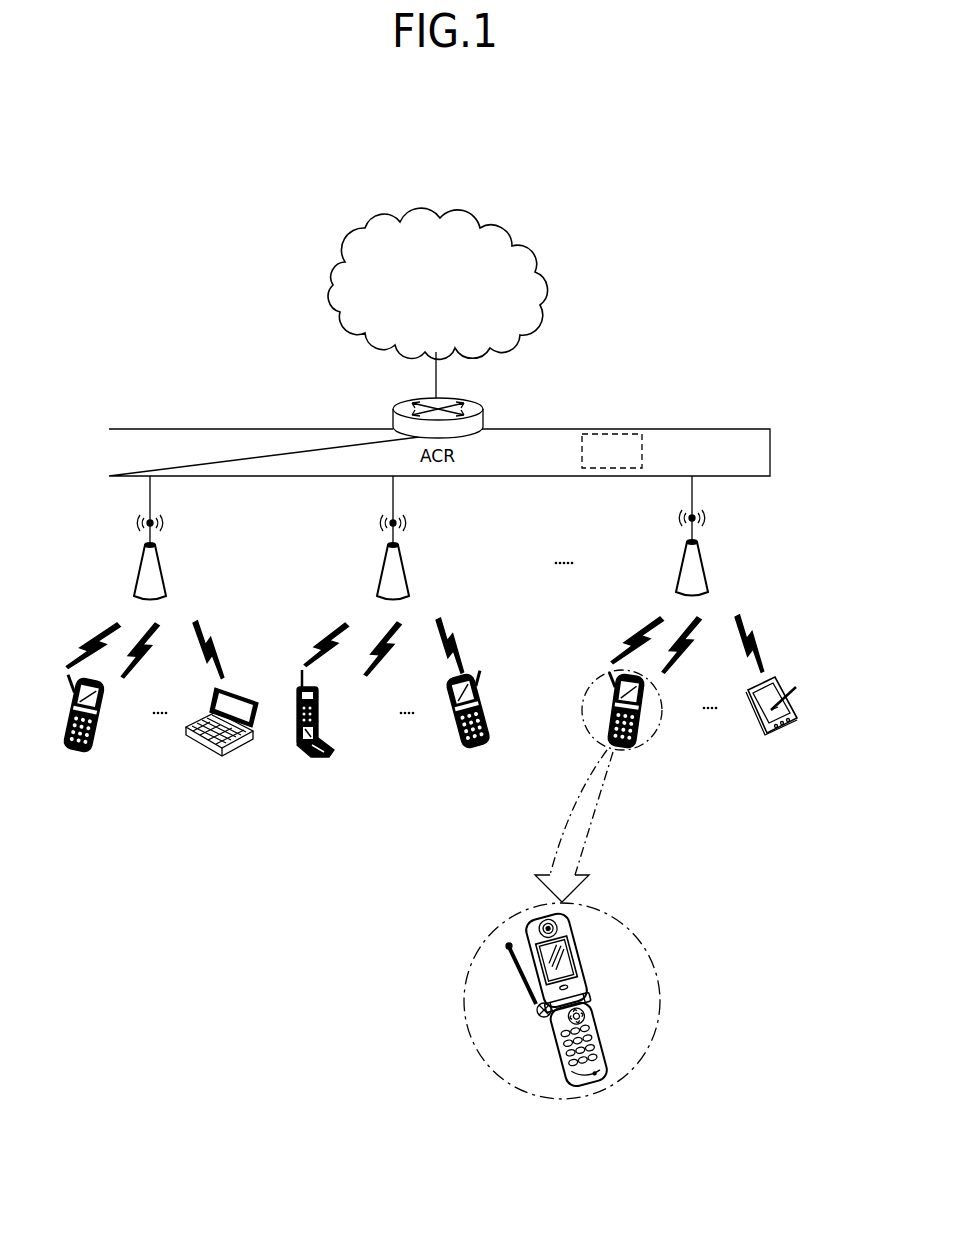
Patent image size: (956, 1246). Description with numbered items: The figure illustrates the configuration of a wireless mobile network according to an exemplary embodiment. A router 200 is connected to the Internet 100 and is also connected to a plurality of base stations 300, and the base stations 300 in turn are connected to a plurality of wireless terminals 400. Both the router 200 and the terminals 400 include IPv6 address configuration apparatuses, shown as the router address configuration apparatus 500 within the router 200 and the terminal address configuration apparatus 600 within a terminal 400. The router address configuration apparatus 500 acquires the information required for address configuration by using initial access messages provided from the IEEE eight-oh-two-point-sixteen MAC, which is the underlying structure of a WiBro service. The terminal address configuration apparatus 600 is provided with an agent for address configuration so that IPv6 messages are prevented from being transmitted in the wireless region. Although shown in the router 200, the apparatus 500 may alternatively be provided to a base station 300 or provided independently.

The Internet 100 is at (517, 243).
The router 200 is at (480, 403).
The base stations 300 is at (163, 562).
The terminals 400 is at (817, 757).
The router address configuration apparatus 500 is at (643, 452).
The terminal address configuration apparatus 600 is at (533, 1015).